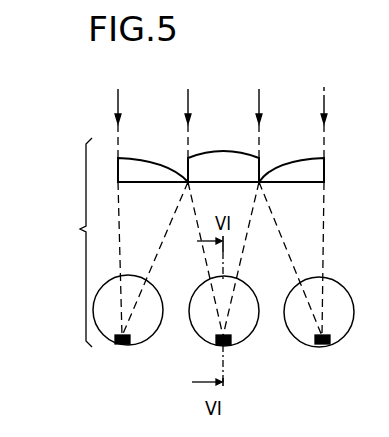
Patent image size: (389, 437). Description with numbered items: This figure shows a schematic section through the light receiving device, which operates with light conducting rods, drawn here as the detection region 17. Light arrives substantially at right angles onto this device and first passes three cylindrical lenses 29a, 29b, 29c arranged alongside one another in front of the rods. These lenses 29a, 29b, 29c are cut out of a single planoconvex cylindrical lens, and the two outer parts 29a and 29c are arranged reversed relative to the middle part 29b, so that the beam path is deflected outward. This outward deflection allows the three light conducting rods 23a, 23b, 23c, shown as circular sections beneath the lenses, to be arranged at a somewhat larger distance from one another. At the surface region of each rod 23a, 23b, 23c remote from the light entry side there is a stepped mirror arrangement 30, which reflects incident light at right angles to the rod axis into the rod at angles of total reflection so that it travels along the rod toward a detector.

The optical detection unit 17 is at (75, 242).
The cylindrical lens 29a is at (147, 159).
The cylindrical lens 29b is at (213, 158).
The cylindrical lens 29c is at (294, 172).
The light conducting rod 23a is at (151, 331).
The light conducting rod 23b is at (250, 322).
The light conducting rod 23c is at (341, 325).
The stepped mirror arrangement 30 is at (119, 346).